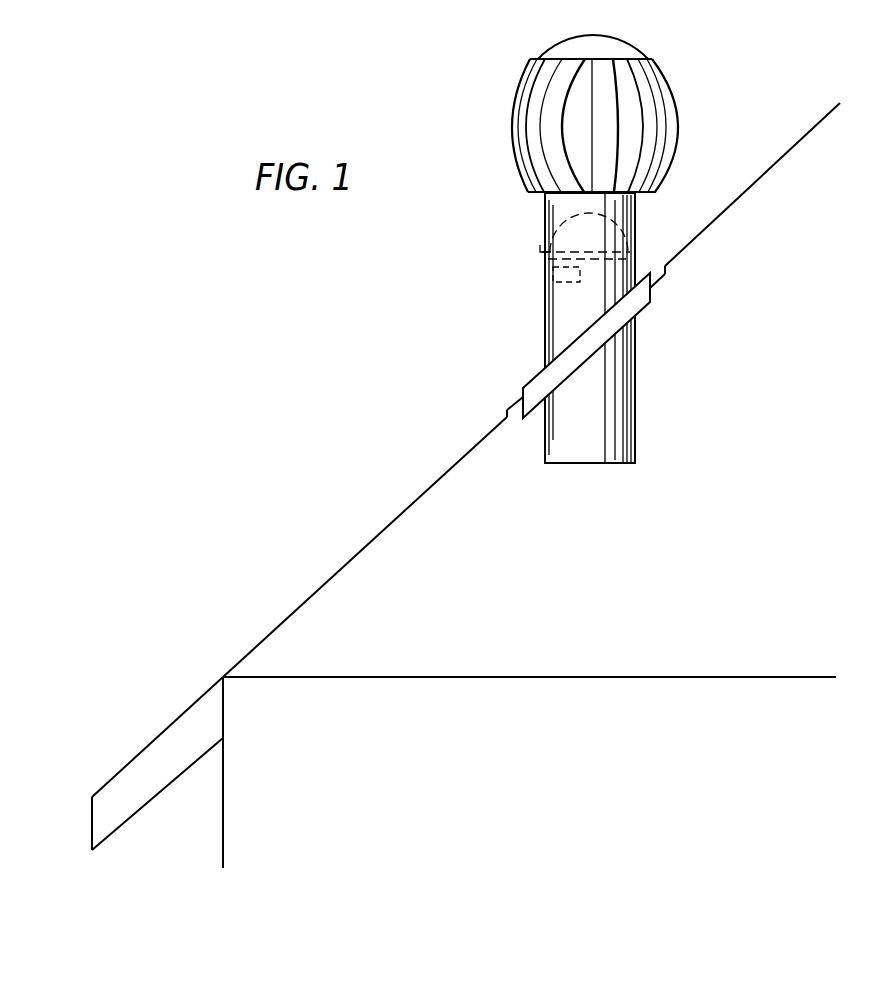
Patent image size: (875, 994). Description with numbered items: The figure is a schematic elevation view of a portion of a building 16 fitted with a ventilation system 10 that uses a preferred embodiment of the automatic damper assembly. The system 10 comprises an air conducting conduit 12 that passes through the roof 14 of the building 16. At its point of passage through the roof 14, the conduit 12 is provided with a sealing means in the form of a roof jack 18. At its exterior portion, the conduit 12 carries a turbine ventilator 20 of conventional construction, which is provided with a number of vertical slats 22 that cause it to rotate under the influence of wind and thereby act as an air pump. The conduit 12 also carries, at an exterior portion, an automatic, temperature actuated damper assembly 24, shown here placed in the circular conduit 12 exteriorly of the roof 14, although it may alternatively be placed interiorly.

The ventilation system 10 is at (410, 331).
The air conducting conduit 12 is at (545, 321).
The roof 14 is at (374, 540).
The building 16 is at (223, 831).
The roof jack 18 is at (648, 305).
The turbine ventilator 20 is at (502, 124).
The vertical slats 22 is at (673, 92).
The damper assembly 24 is at (532, 261).